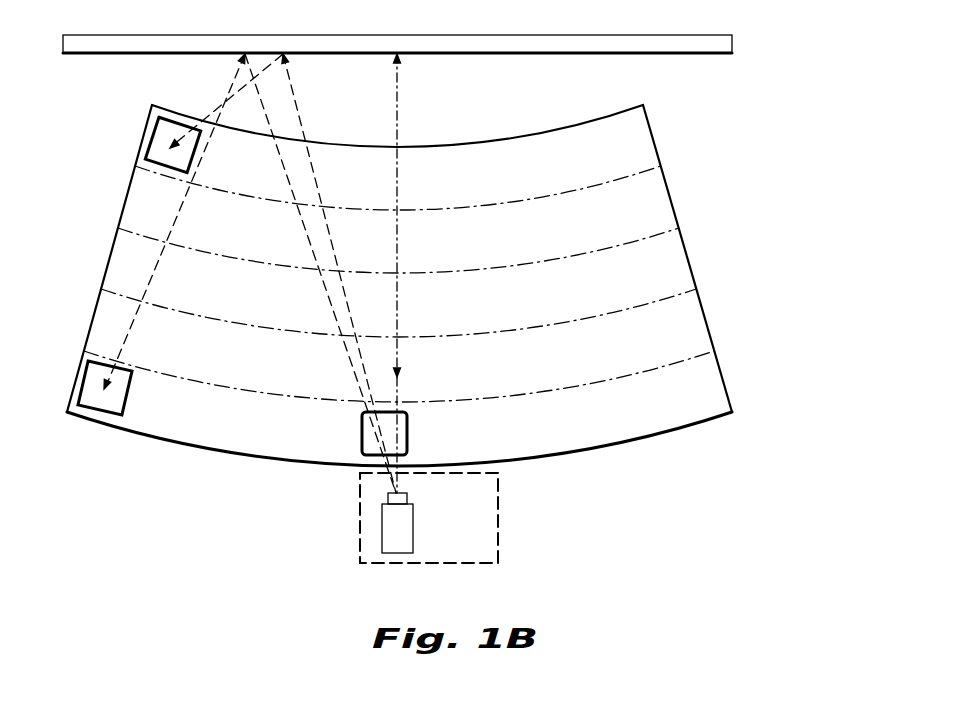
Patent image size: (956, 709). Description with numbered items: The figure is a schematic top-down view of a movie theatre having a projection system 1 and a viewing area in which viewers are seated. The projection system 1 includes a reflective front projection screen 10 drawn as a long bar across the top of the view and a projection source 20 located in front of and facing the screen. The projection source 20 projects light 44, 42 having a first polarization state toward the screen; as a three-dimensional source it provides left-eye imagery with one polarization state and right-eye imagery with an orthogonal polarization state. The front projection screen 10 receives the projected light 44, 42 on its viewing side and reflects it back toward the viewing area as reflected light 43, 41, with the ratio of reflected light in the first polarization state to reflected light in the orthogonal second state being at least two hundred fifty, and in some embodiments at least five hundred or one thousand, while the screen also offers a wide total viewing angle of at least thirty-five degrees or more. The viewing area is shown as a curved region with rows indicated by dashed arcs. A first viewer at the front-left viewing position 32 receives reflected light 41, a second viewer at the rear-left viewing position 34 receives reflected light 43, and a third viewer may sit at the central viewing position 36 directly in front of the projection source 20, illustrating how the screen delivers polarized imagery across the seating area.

The projection system 1 is at (622, 503).
The front projection screen 10 is at (738, 41).
The projection source 20 is at (380, 526).
The front-left viewing position 32 is at (150, 138).
The rear-left viewing position 34 is at (128, 396).
The central viewing position 36 is at (362, 432).
The reflected light 41 is at (217, 108).
The projected light 42 is at (301, 112).
The reflected light 43 is at (128, 333).
The projected light 44 is at (303, 222).